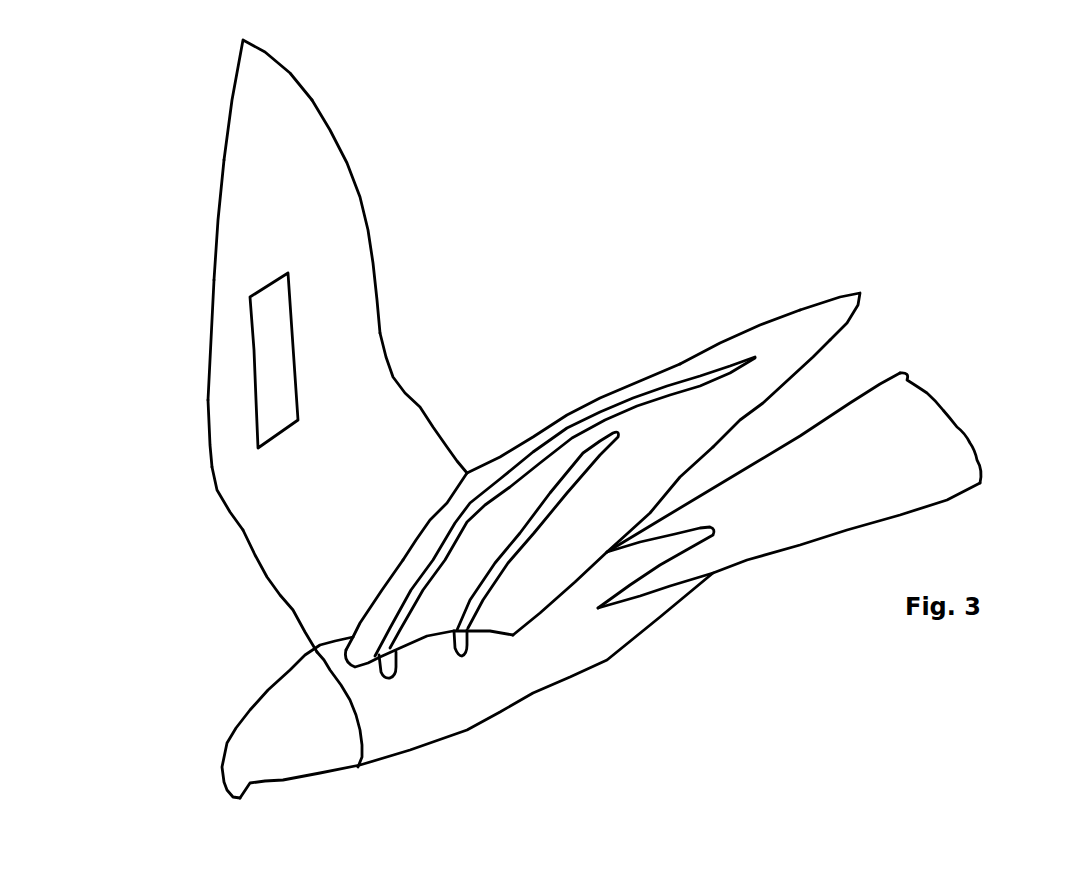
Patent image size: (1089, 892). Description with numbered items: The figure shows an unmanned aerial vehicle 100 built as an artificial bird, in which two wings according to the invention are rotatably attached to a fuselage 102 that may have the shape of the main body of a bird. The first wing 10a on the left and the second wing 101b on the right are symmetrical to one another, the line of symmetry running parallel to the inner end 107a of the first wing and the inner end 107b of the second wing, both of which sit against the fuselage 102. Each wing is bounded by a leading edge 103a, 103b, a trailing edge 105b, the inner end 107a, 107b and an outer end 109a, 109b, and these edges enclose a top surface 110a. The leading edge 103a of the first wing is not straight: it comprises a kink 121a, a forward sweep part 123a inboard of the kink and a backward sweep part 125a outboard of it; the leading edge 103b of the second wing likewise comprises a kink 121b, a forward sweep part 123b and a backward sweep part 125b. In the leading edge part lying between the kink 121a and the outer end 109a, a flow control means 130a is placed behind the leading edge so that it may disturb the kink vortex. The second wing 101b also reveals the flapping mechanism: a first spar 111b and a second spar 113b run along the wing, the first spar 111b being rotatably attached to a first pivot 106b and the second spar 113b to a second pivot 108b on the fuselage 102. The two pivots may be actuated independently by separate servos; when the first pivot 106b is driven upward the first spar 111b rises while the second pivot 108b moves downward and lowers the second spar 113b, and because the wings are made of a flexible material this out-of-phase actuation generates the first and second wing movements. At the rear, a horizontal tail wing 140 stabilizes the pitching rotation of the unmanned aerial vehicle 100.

The unmanned aerial vehicle 100 is at (755, 654).
The fuselage 102 is at (517, 670).
The first wing 10a is at (360, 187).
The outer end 109a is at (243, 40).
The backward sweep part 125a is at (218, 257).
The leading edge 103a is at (212, 310).
The flow control means 130a is at (273, 363).
The top surface 110a is at (325, 312).
The kink 121a is at (207, 460).
The forward sweep part 123a is at (238, 530).
The inner end 107a is at (340, 637).
The inner end 107b is at (360, 662).
The second wing 101b is at (783, 335).
The leading edge 103b is at (518, 437).
The backward sweep part 125b is at (722, 342).
The outer end 109b is at (853, 292).
The trailing edge 105b is at (752, 410).
The kink 121b is at (457, 483).
The forward sweep part 123b is at (397, 560).
The first spar 111b is at (670, 388).
The second spar 113b is at (523, 533).
The first pivot 106b is at (390, 677).
The second pivot 108b is at (463, 650).
The horizontal tail wing 140 is at (930, 447).